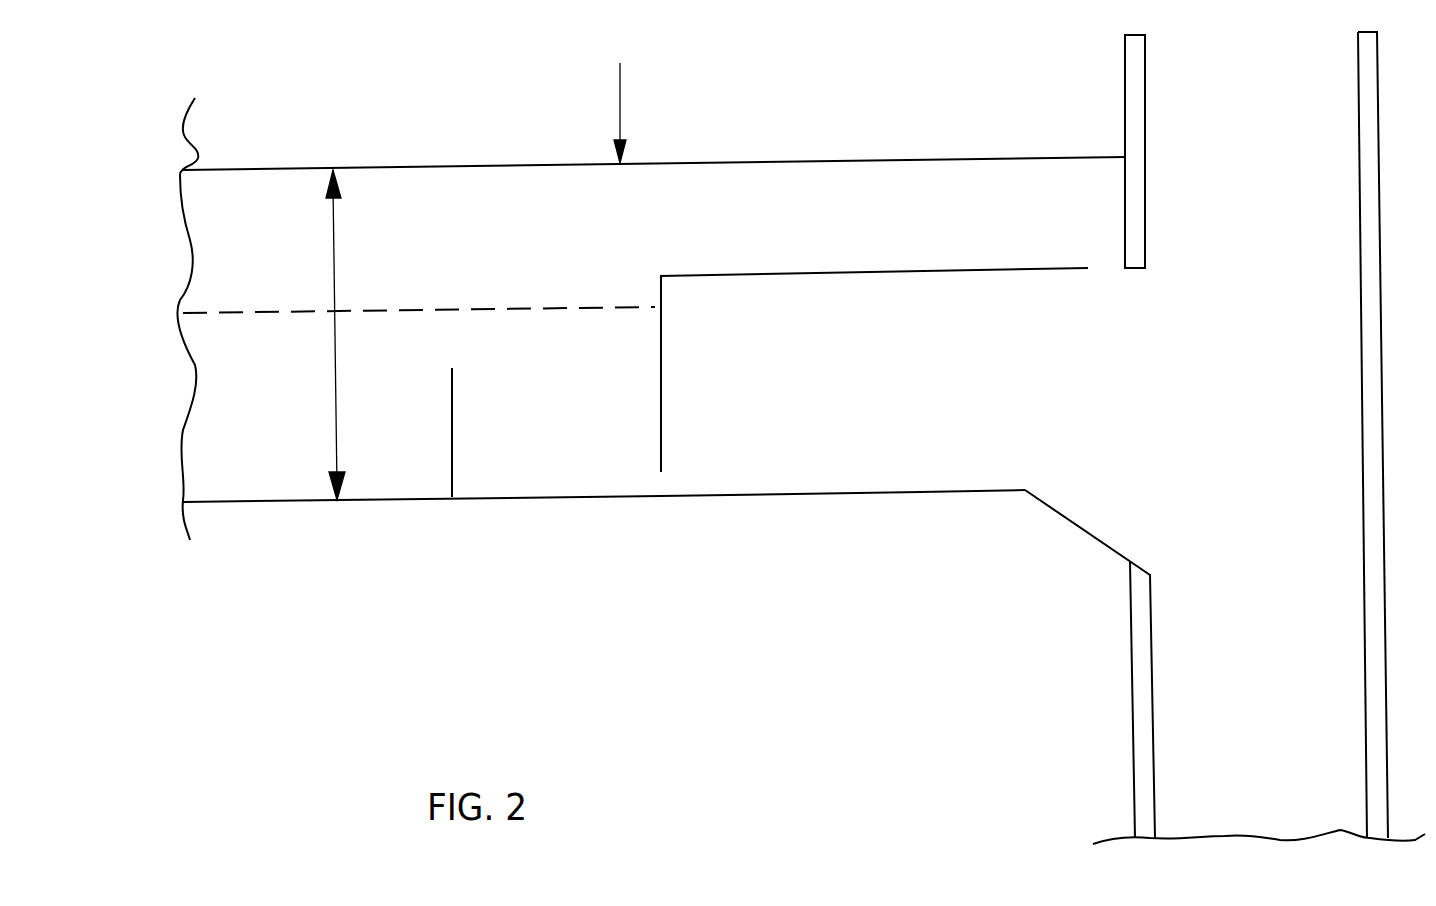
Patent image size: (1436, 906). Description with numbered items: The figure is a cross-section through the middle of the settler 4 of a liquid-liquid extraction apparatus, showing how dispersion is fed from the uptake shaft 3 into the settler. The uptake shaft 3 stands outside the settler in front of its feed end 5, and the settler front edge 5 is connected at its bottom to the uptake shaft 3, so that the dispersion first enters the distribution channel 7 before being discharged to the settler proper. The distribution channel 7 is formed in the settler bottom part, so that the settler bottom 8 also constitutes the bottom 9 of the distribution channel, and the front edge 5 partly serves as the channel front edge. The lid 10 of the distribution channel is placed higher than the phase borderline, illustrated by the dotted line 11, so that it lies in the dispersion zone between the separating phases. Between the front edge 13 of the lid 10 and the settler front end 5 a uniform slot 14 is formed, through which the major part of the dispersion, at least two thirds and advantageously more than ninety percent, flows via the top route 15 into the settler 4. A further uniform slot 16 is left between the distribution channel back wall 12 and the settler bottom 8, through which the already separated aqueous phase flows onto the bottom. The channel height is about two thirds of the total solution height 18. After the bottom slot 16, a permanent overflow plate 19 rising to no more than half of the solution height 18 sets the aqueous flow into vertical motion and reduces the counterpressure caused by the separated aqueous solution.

The uptake shaft 3 is at (1350, 684).
The settler 4 is at (615, 85).
The settler feed end 5 is at (1150, 98).
The distribution channel 7 is at (753, 458).
The settler bottom 8 is at (236, 504).
The bottom of the distribution channel 9 is at (920, 490).
The lid of the distribution channel 10 is at (748, 272).
The phase borderline 11 is at (238, 316).
The back wall of the distribution channel 12 is at (662, 353).
The front edge of the distribution channel lid 13 is at (1089, 270).
The top slot 14 is at (1100, 262).
The top route 15 is at (884, 186).
The bottom slot 16 is at (664, 480).
The solution height 18 is at (338, 282).
The overflow plate 19 is at (461, 414).